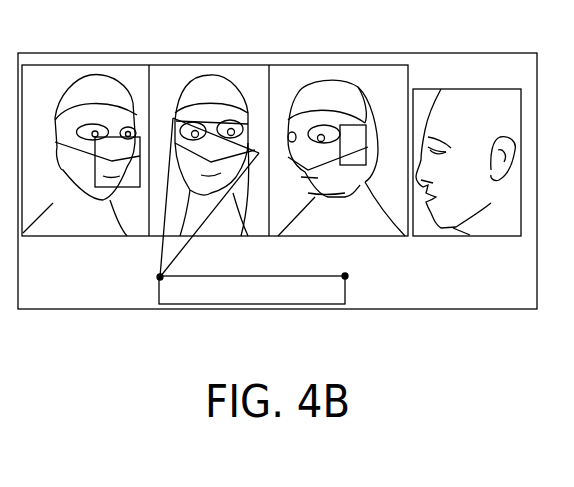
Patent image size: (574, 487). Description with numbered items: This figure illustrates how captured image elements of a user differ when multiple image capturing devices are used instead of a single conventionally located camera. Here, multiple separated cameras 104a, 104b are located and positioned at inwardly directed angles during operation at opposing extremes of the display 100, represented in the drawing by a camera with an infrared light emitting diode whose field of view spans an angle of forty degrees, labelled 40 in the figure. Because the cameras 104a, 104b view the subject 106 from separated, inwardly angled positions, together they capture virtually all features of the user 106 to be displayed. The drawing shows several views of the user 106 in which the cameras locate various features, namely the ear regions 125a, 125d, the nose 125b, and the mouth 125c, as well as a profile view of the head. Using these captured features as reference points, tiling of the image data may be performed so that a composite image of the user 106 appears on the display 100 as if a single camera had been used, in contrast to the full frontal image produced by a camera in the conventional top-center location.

The display 100 is at (205, 304).
The camera 104a is at (157, 277).
The camera 104b is at (348, 277).
The user 106 is at (203, 205).
The field of view angle 40 is at (163, 259).
The ear region 125a is at (63, 123).
The nose 125b is at (123, 127).
The mouth 125c is at (311, 137).
The ear region 125d is at (360, 133).